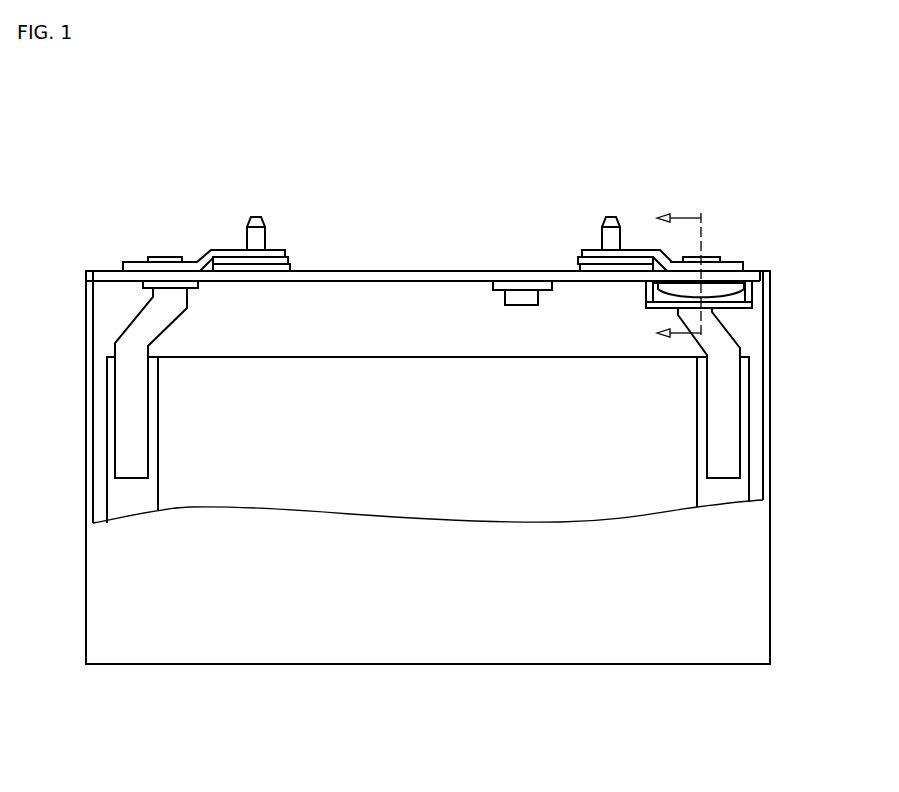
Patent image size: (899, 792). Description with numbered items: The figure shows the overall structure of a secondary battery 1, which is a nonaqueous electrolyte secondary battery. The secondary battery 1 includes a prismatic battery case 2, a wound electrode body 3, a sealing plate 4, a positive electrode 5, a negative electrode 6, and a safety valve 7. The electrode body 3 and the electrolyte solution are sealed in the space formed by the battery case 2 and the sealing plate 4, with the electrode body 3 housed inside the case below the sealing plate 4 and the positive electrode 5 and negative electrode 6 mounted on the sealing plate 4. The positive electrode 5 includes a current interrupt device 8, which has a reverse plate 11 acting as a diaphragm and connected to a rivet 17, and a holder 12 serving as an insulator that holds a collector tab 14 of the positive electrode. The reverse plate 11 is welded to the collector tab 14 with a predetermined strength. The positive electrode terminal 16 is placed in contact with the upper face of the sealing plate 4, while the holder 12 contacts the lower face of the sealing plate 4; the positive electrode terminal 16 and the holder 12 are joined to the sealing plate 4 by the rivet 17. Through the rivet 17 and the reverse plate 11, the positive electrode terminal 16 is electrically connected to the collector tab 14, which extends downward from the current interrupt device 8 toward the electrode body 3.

The secondary battery 1 is at (498, 170).
The prismatic battery case 2 is at (428, 665).
The wound electrode body 3 is at (392, 357).
The sealing plate 4 is at (420, 271).
The positive electrode 5 is at (610, 202).
The negative electrode 6 is at (255, 202).
The safety valve 7 is at (513, 281).
The current interrupt device 8 is at (627, 297).
The reverse plate 11 is at (730, 298).
The holder 12 is at (752, 287).
The collector tab 14 is at (727, 410).
The positive electrode terminal 16 is at (748, 258).
The rivet 17 is at (707, 253).